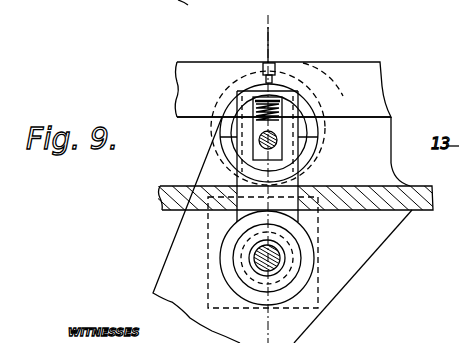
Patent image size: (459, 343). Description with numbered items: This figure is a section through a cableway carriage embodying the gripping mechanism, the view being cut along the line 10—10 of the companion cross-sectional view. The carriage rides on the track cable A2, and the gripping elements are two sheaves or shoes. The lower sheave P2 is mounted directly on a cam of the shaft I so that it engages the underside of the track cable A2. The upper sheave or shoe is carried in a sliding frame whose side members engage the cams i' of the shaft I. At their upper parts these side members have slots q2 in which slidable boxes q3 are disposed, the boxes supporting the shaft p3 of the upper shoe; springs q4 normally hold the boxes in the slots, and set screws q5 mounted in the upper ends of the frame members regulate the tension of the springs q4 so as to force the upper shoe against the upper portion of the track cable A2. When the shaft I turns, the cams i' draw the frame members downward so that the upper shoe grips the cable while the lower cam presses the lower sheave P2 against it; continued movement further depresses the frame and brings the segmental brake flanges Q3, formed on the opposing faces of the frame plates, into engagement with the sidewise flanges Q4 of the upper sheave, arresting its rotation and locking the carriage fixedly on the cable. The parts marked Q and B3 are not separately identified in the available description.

The section line 10 is at (287, 40).
The set screws q5 is at (274, 63).
The segmental flanges Q3 is at (318, 60).
The springs q4 is at (254, 107).
The slots q2 is at (282, 103).
The shaft p3 is at (277, 138).
The slidable boxes q3 is at (253, 137).
The flanges Q4 is at (320, 138).
The disc Q is at (300, 163).
The bracket block B3 is at (256, 153).
The lower sheave P2 is at (227, 272).
The cams i' is at (289, 258).
The shaft I is at (272, 263).
The track cable A2 is at (428, 211).